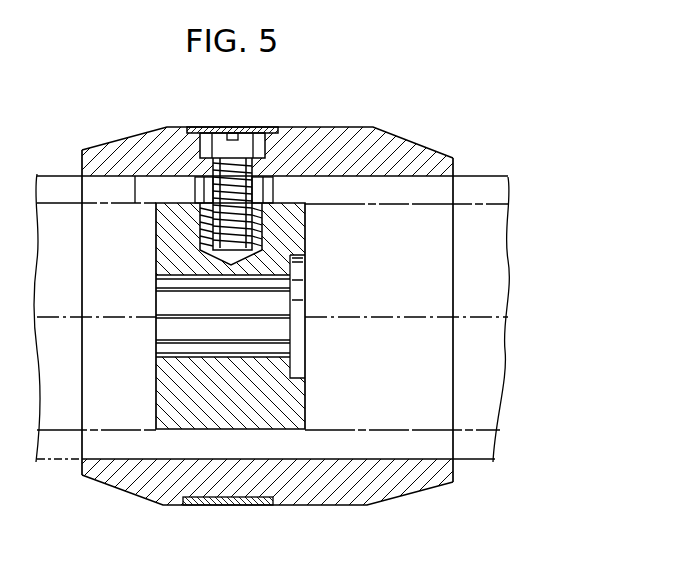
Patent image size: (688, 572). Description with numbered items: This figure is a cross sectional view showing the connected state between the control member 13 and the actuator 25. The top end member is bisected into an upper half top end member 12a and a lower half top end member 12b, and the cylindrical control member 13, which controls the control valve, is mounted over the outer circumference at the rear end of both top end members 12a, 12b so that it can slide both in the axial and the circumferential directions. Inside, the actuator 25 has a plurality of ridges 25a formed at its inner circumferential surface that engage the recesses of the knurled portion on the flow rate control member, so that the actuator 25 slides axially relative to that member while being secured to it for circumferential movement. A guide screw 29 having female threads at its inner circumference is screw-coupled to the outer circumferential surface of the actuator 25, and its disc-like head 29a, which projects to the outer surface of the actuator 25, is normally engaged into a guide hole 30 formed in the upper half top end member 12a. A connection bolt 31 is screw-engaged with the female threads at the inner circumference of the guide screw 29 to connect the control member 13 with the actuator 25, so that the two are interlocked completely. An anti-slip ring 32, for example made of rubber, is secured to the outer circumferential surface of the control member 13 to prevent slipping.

The control member 13 is at (403, 148).
The upper half top end member 12a is at (487, 243).
The lower half top end member 12b is at (480, 401).
The actuator 25 is at (296, 404).
The ridges 25a is at (157, 356).
The guide screw 29 is at (284, 244).
The disc-like head 29a is at (270, 195).
The guide hole 30 is at (139, 198).
The connection bolt 31 is at (257, 133).
The anti-slip ring 32 is at (205, 127).